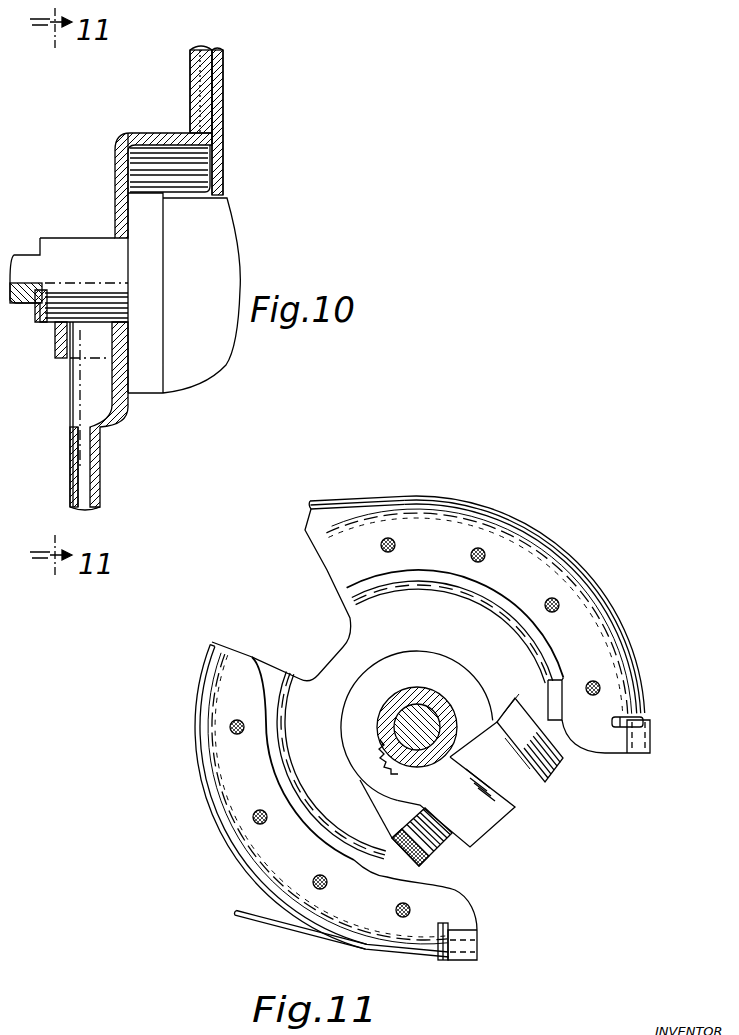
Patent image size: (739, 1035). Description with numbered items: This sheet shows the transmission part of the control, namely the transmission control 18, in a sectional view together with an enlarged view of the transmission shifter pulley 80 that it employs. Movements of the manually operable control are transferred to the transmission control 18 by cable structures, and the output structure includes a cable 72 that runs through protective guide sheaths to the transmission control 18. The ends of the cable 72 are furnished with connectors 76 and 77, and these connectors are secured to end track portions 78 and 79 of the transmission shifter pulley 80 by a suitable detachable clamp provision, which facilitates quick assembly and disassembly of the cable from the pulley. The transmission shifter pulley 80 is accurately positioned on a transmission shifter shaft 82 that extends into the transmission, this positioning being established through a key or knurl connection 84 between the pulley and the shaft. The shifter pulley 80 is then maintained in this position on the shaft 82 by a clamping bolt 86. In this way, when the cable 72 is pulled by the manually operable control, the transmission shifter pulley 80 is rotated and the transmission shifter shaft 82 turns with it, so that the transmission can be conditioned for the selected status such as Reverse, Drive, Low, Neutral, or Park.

In FIG. 10, the transmission control 18 is at (31, 304).
In FIG. 11, the transmission control 18 is at (199, 775).
In FIG. 10, the cable 72 is at (207, 48).
In FIG. 11, the cable 72 is at (258, 921).
In FIG. 11, the connector 76 is at (444, 962).
In FIG. 11, the connector 77 is at (644, 722).
In FIG. 11, the end track portion 78 is at (478, 950).
In FIG. 11, the end track portion 79 is at (651, 748).
In FIG. 10, the transmission shifter pulley 80 is at (172, 133).
In FIG. 11, the transmission shifter pulley 80 is at (312, 527).
In FIG. 10, the transmission shifter shaft 82 is at (95, 243).
In FIG. 11, the transmission shifter shaft 82 is at (404, 696).
In FIG. 11, the key or knurl connection 84 is at (397, 760).
In FIG. 11, the clamping bolt 86 is at (554, 770).